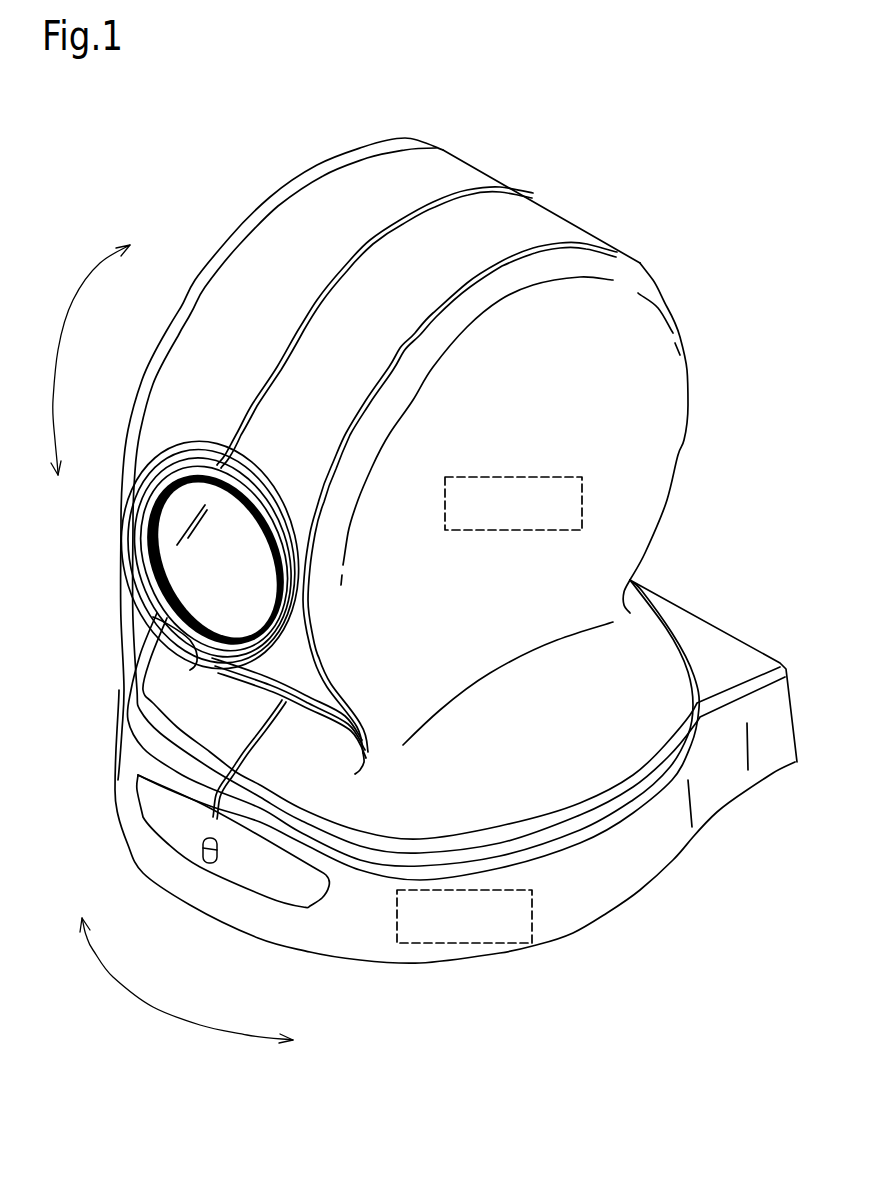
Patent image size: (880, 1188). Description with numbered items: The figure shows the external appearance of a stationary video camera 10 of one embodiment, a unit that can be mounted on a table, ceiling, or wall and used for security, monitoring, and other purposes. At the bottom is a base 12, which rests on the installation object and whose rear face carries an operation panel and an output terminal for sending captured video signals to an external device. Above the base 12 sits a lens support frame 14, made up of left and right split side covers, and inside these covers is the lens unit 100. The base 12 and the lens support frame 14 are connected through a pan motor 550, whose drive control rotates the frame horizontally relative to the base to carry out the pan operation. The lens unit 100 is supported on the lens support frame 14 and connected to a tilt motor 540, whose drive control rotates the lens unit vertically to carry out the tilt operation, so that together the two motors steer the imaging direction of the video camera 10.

The video camera 10 is at (685, 128).
The base 12 is at (673, 842).
The lens support frame 14 is at (160, 655).
The lens unit 100 is at (175, 521).
The tilt motor 540 is at (582, 498).
The pan motor 550 is at (532, 913).